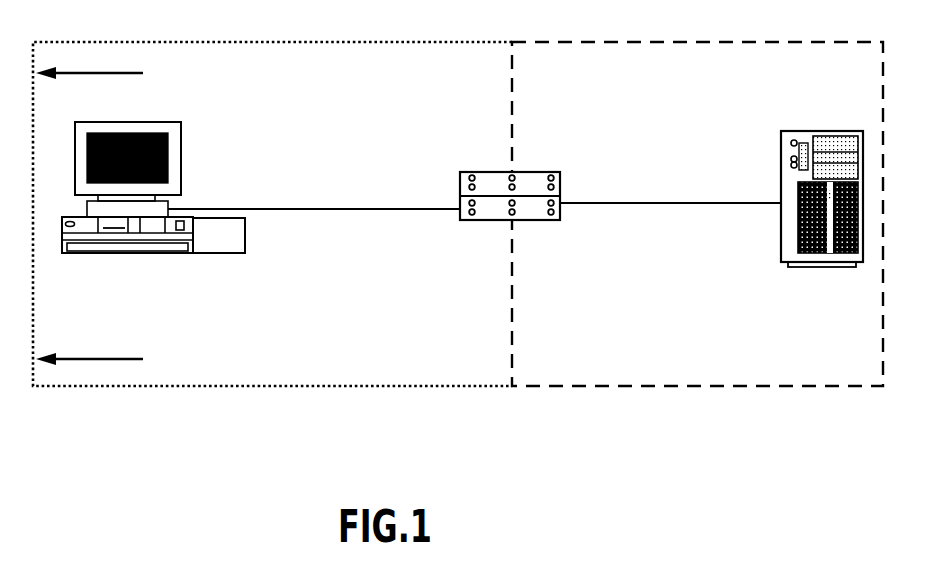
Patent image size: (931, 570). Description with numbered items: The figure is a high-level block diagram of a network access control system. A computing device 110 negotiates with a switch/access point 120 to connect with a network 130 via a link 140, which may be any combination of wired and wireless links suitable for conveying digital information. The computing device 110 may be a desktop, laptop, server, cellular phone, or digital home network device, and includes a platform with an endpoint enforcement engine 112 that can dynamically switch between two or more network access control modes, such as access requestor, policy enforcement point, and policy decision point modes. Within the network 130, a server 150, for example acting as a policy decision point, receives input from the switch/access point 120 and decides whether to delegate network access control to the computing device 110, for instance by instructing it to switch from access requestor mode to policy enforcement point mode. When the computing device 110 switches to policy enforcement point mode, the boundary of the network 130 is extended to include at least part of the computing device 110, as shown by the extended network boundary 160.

The computing device 110 is at (128, 211).
The endpoint enforcement engine 112 is at (237, 246).
The switch/access point 120 is at (483, 172).
The network 130 is at (652, 74).
The link 140 is at (347, 208).
The server 150 is at (810, 268).
The extended network boundary 160 is at (113, 215).